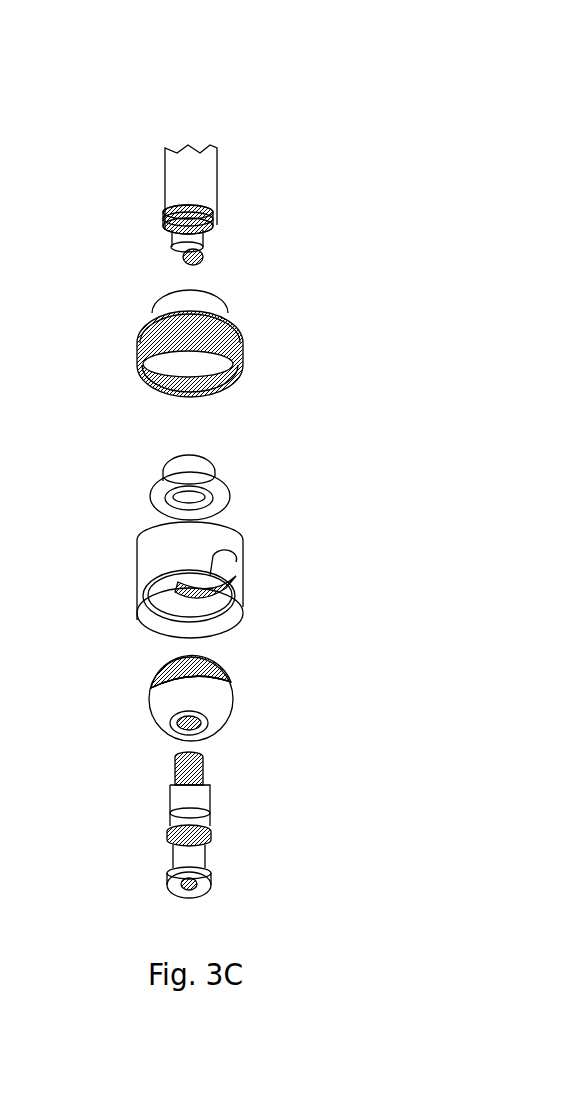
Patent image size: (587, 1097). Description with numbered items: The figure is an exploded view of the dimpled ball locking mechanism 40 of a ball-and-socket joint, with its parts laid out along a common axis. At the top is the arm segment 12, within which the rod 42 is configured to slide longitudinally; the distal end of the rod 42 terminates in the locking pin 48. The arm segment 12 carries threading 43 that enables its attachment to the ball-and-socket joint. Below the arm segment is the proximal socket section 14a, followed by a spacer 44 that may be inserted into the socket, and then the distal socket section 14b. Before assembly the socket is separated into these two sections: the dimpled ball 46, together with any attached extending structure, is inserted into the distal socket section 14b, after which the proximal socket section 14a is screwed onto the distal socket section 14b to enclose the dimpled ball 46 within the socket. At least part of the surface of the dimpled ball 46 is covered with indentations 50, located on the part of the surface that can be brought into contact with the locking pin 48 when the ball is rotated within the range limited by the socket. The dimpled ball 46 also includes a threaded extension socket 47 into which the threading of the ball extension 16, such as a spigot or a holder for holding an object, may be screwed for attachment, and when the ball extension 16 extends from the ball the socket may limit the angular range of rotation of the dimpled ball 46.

The dimpled ball locking mechanism 40 is at (278, 96).
The arm segment 12 is at (212, 195).
The rod 42 is at (181, 236).
The threading 43 is at (205, 224).
The locking pin 48 is at (187, 258).
The proximal socket section 14a is at (222, 312).
The spacer 44 is at (213, 472).
The distal socket section 14b is at (145, 570).
The indentations 50 is at (217, 670).
The dimpled ball 46 is at (163, 707).
The threaded extension socket 47 is at (195, 730).
The ball extension 16 is at (205, 845).